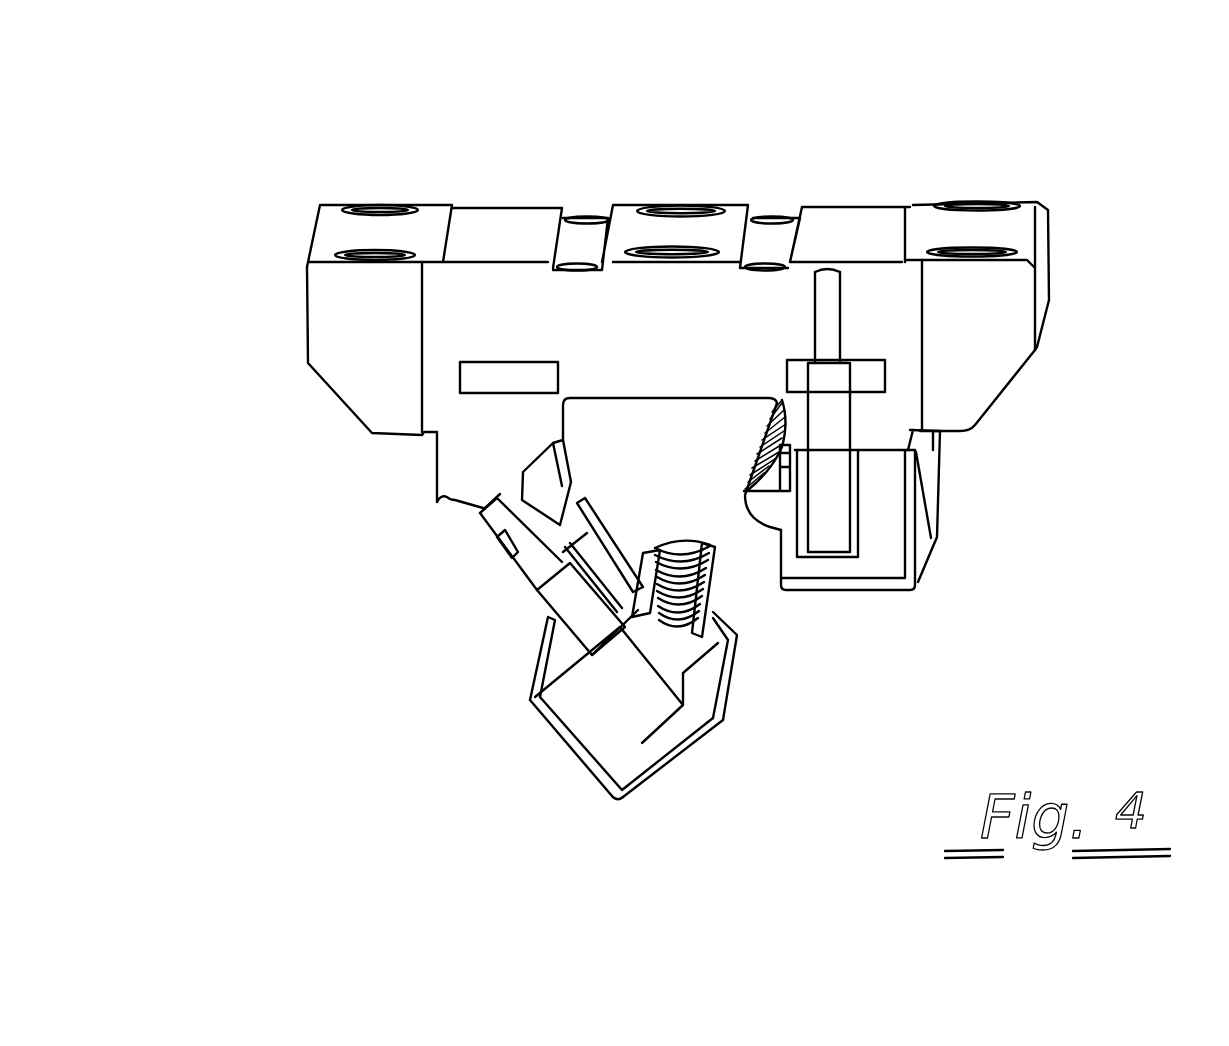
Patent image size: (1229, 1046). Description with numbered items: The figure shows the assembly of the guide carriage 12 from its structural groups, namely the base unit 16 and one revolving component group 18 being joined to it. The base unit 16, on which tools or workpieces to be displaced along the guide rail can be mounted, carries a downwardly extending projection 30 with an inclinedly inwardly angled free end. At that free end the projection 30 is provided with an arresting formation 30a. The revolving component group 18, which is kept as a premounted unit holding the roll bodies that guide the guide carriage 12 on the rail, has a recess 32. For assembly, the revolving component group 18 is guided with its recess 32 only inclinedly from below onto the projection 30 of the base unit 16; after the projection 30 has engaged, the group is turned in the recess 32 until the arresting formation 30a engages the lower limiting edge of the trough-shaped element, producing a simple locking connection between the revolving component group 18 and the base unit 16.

The guide carriage 12 is at (1097, 157).
The base unit 16 is at (326, 290).
The projection 30 is at (483, 478).
The arresting formation 30a is at (572, 479).
The revolving component group 18 is at (620, 777).
The recess 32 is at (713, 657).